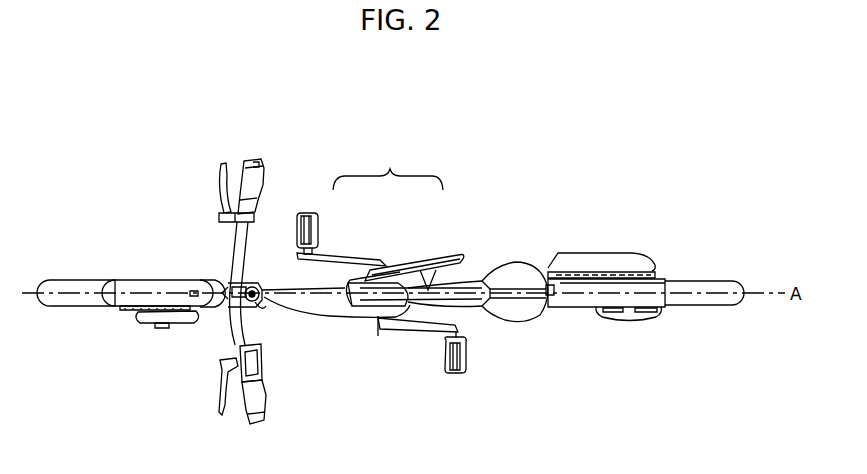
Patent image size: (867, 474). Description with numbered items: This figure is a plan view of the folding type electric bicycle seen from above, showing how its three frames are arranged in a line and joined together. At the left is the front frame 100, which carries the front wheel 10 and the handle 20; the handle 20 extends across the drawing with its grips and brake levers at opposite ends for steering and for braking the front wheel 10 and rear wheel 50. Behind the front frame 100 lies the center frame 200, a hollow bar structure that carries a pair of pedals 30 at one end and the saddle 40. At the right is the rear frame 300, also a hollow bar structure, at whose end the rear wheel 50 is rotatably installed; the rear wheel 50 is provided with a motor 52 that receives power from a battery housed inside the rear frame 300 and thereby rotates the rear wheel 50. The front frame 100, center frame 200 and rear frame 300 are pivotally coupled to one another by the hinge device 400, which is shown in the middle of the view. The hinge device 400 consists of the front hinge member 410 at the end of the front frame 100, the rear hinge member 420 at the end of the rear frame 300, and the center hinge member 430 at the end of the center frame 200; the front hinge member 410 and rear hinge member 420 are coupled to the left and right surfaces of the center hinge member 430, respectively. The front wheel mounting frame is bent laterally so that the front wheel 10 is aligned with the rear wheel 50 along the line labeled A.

The front wheel 10 is at (80, 304).
The handle 20 is at (210, 366).
The pedals 30 is at (443, 357).
The saddle 40 is at (517, 315).
The rear wheel 50 is at (703, 308).
The motor 52 is at (630, 320).
The front frame 100 is at (306, 326).
The center frame 200 is at (430, 286).
The rear frame 300 is at (569, 268).
The hinge device 400 is at (388, 163).
The front hinge member 410 is at (340, 290).
The rear hinge member 420 is at (398, 270).
The center hinge member 430 is at (377, 280).